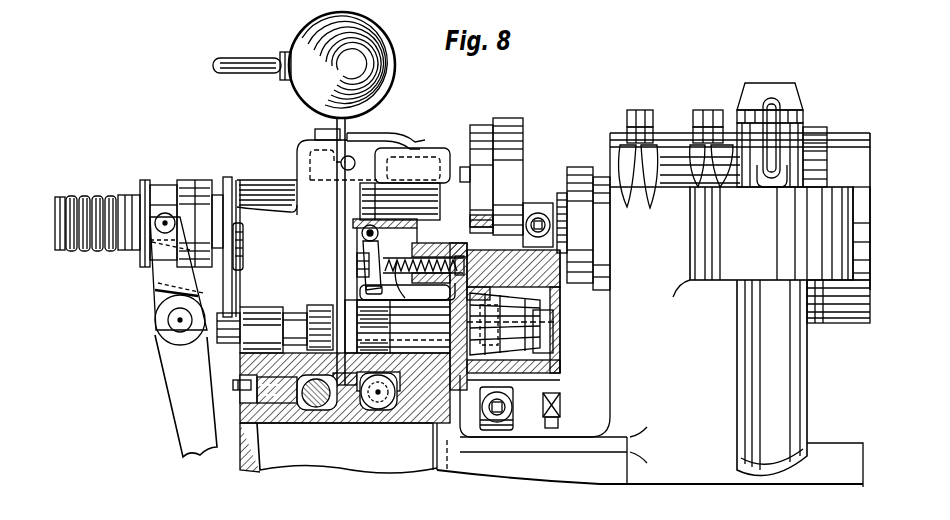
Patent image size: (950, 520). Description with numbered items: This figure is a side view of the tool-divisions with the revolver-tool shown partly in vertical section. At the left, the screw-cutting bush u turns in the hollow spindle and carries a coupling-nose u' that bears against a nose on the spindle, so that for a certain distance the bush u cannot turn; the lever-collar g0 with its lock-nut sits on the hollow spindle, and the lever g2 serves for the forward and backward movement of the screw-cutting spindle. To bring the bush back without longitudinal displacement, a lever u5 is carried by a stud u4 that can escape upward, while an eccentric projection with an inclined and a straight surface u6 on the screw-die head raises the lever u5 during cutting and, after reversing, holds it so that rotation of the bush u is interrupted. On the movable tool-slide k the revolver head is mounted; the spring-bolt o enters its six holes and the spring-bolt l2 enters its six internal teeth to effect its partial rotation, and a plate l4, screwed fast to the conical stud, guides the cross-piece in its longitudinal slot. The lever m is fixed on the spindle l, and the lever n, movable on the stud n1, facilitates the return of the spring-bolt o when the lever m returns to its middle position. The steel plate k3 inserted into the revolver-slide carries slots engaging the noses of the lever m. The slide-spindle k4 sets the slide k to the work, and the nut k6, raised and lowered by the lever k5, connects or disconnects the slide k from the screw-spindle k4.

The screw-cutting bush u is at (225, 139).
The lever-collar g0 is at (163, 190).
The lever g2 is at (186, 396).
The lever k5 is at (227, 281).
The coupling-nose u' is at (307, 211).
The stud u4 is at (352, 160).
The lever u5 is at (412, 165).
The inclined and straight surface u6 is at (410, 205).
The stud n1 is at (361, 233).
The lever n is at (376, 254).
The lever m is at (338, 267).
The spindle l is at (380, 297).
The spring-bolt o is at (470, 260).
The spring-bolt l2 is at (471, 348).
The plate l4 is at (561, 361).
The movable tool-slide k is at (333, 326).
The steel plate k3 is at (365, 421).
The slide-spindle k4 is at (328, 421).
The nut k6 is at (293, 421).